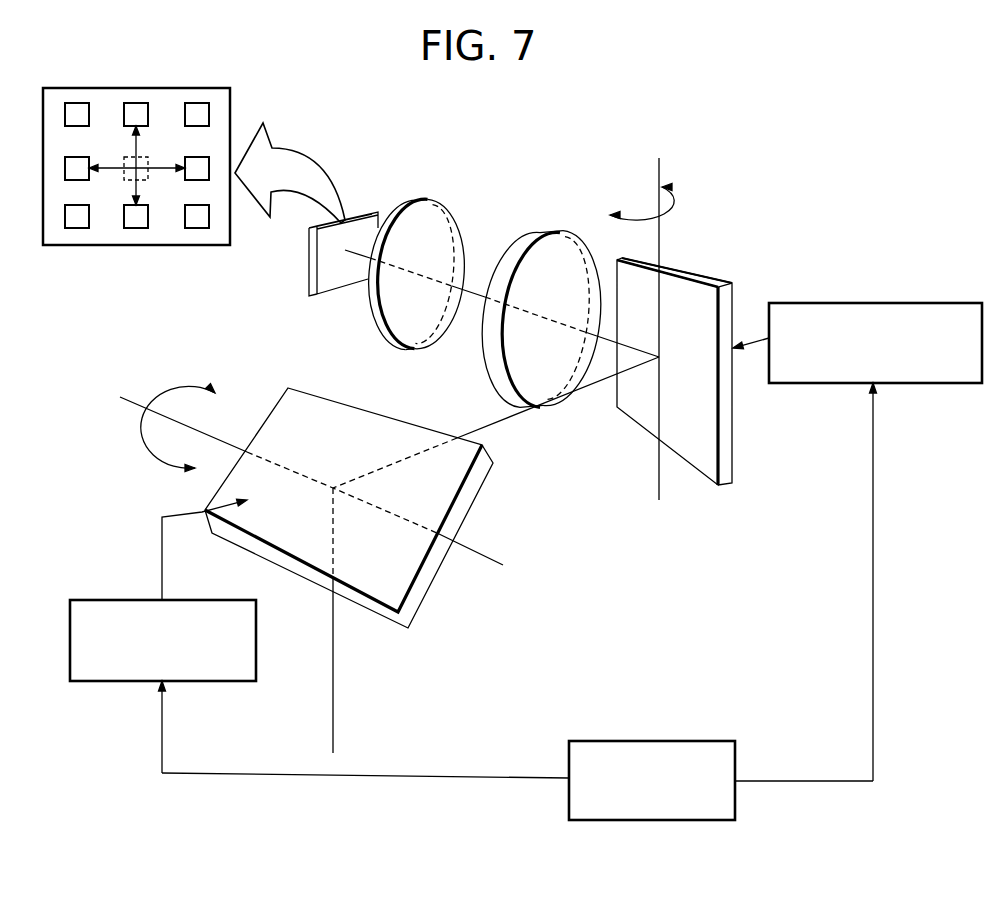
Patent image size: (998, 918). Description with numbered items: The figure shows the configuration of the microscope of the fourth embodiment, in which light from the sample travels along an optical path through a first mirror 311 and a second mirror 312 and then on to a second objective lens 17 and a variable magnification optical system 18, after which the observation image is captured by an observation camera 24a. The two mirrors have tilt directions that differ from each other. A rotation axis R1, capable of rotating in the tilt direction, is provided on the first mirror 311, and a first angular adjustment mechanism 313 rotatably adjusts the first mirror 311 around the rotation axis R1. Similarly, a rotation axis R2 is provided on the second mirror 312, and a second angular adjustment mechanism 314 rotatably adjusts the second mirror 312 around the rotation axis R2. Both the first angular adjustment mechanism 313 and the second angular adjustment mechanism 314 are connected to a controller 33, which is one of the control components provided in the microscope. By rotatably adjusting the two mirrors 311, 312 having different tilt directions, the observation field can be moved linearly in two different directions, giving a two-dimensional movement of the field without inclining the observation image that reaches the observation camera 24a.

The observation camera 24a is at (345, 218).
The variable magnification optical system 18 is at (420, 198).
The second objective lens 17 is at (547, 230).
The rotation axis R2 is at (670, 155).
The second mirror 312 is at (730, 447).
The second angular adjustment mechanism 314 is at (923, 303).
The rotation axis R1 is at (130, 413).
The first mirror 311 is at (428, 593).
The first angular adjustment mechanism 313 is at (104, 600).
The controller 33 is at (680, 740).